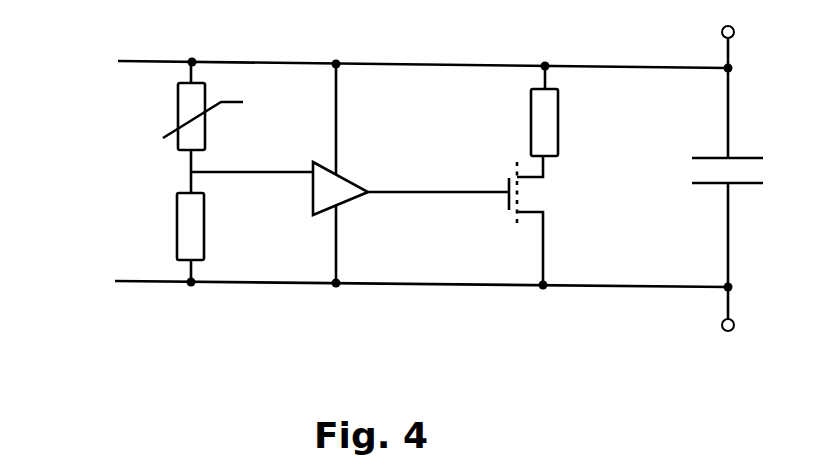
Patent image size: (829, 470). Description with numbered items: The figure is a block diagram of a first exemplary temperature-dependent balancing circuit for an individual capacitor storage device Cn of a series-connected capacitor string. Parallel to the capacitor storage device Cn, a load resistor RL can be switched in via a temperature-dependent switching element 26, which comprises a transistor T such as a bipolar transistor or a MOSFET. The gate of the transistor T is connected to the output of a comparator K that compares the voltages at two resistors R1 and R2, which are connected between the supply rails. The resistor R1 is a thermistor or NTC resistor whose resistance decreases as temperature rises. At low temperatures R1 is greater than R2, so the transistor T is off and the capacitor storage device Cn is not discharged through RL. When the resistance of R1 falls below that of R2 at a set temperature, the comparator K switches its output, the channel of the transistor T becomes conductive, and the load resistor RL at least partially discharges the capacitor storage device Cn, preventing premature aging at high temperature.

The temperature-dependent switching element 26 is at (257, 304).
The thermistor R1 is at (202, 127).
The resistor R2 is at (118, 237).
The comparator K is at (349, 198).
The transistor T is at (506, 204).
The load resistor RL is at (619, 111).
The capacitor storage device Cn is at (745, 174).